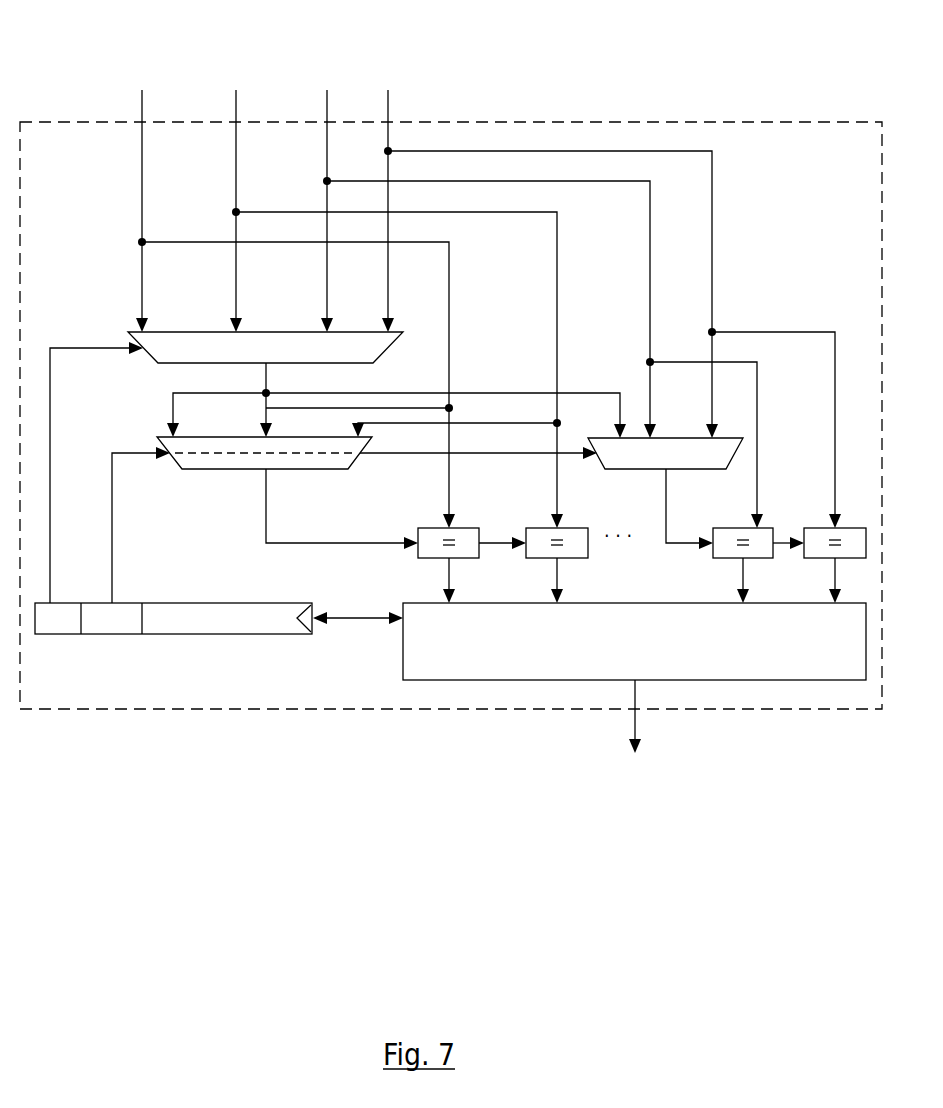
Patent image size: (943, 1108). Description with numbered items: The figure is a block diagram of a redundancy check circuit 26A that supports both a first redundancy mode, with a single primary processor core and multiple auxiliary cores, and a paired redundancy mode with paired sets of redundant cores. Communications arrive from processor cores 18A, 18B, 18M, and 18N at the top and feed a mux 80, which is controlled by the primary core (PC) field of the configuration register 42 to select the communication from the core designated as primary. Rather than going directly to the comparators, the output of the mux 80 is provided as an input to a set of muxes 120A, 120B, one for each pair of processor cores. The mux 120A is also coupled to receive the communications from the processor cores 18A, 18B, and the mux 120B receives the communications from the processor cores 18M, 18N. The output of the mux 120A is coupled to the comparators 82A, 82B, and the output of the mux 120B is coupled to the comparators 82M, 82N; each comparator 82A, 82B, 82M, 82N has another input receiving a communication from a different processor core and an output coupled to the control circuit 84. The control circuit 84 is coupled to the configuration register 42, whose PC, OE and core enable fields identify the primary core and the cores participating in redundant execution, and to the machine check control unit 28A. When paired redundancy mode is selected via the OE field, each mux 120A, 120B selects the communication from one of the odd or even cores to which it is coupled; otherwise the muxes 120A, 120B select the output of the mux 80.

The redundancy check circuit 26A is at (330, 699).
The processor core 18A is at (260, 267).
The processor core 18B is at (367, 267).
The processor core 18M is at (521, 267).
The processor core 18N is at (611, 267).
The mux 80 is at (253, 358).
The mux 120A is at (354, 520).
The mux 120B is at (639, 465).
The comparator circuit 82A is at (434, 565).
The comparator circuit 82B is at (586, 544).
The comparator circuit 82M is at (724, 565).
The comparator circuit 82N is at (812, 565).
The control circuit 84 is at (722, 651).
The configuration register 42 is at (173, 598).
The machine check control unit 28A is at (634, 746).